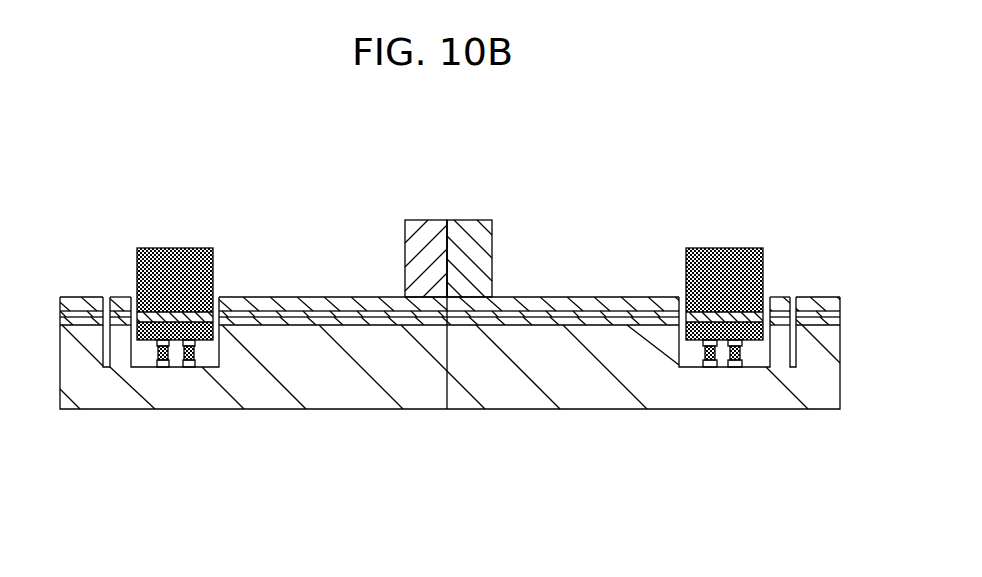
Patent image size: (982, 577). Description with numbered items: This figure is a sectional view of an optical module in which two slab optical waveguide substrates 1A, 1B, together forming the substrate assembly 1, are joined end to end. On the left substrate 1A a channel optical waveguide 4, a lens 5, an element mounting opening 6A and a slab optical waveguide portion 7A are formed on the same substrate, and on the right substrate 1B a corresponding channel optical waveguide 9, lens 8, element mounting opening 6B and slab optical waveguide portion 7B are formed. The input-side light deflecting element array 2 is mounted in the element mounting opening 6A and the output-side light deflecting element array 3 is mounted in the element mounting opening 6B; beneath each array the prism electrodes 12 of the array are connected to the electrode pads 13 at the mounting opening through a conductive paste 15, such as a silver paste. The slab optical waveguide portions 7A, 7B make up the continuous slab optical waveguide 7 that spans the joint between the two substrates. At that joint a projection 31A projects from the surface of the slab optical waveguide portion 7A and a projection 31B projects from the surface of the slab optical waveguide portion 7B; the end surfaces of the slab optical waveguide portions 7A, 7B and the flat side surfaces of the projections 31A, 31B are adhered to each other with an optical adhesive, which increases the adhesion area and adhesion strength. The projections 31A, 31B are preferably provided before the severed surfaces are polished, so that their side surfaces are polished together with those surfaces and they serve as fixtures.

The slab optical waveguide substrate 1 is at (450, 379).
The slab optical waveguide substrate 1A is at (370, 424).
The slab optical waveguide substrate 1B is at (658, 408).
The input-side light deflecting element array 2 is at (188, 238).
The output-side light deflecting element array 3 is at (730, 238).
The channel optical waveguide 4 is at (75, 287).
The lens 5 is at (104, 287).
The element mounting opening 6A is at (226, 288).
The element mounting opening 6B is at (671, 288).
The slab optical waveguide portion 7 is at (451, 213).
The slab optical waveguide portion 7A is at (343, 284).
The slab optical waveguide portion 7B is at (543, 234).
The lens 8 is at (798, 286).
The channel optical waveguide 9 is at (824, 286).
The prism electrode 12 is at (158, 346).
The electrode pad 13 is at (168, 355).
The conductive paste 15 is at (182, 355).
The projection 31A is at (424, 228).
The projection 31B is at (470, 228).